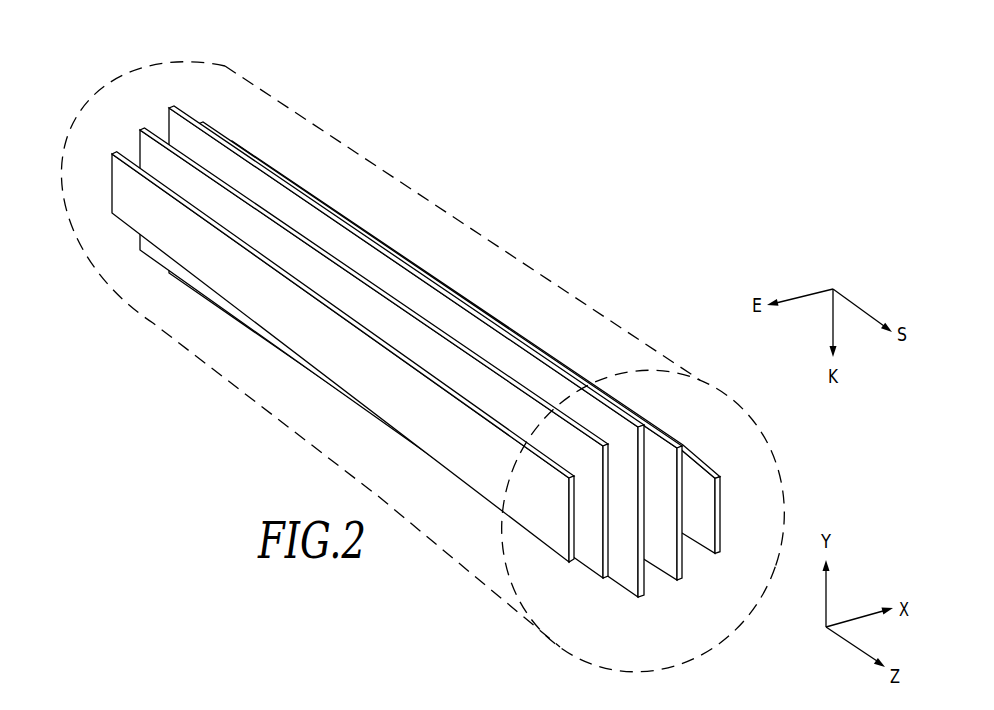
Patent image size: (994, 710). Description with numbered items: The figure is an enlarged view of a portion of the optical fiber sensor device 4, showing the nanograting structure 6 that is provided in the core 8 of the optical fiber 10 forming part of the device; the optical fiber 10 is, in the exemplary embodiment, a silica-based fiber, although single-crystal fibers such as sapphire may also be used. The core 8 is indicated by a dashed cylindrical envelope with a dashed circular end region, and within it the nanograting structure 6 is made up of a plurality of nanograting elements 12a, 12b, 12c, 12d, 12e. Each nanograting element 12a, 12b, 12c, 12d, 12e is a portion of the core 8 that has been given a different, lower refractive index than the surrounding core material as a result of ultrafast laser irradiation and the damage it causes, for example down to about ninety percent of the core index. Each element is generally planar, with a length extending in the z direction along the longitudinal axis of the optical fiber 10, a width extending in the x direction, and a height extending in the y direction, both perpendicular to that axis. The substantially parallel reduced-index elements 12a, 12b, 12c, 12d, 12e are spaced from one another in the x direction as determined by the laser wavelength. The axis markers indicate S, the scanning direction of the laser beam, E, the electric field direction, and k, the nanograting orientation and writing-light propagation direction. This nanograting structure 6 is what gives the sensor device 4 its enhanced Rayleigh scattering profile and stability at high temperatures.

The optical fiber sensor device 4 is at (324, 108).
The nanograting structure 6 is at (436, 393).
The core 8 is at (700, 563).
The optical fiber 10 is at (532, 266).
The nanograting element 12a is at (527, 532).
The nanograting element 12b is at (584, 569).
The nanograting element 12c is at (622, 587).
The nanograting element 12d is at (673, 578).
The nanograting element 12e is at (721, 505).